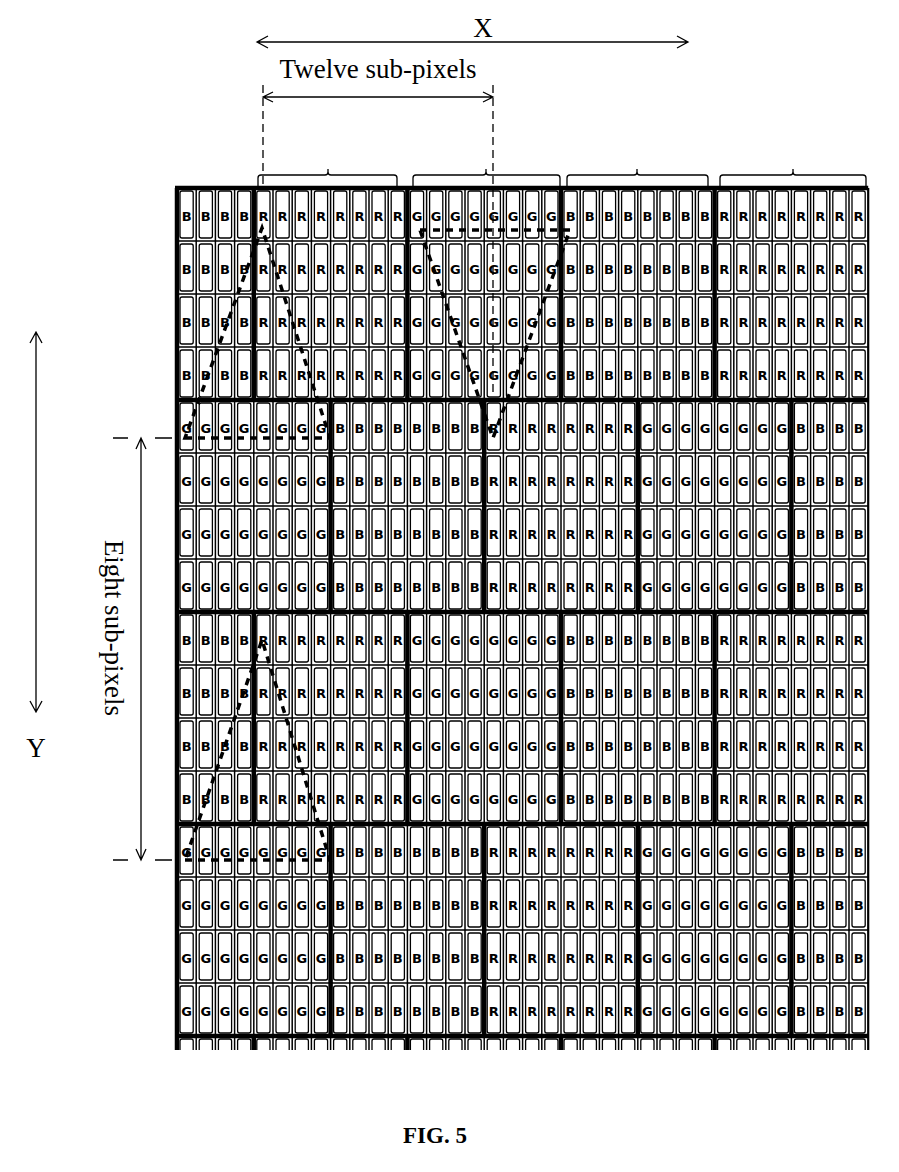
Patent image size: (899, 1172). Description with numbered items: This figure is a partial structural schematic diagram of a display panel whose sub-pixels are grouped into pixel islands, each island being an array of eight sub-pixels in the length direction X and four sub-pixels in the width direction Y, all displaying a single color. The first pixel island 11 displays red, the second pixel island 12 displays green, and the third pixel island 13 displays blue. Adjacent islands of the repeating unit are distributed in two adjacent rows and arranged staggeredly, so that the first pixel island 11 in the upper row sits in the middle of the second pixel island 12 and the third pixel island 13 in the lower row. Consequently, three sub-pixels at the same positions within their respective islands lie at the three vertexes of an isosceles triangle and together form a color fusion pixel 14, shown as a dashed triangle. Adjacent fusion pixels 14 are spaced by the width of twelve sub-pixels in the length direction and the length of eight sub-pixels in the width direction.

The first pixel island 11 is at (562, 163).
The second pixel island 12 is at (486, 163).
The third pixel island 13 is at (637, 163).
The fusion pixel 14 is at (245, 280).